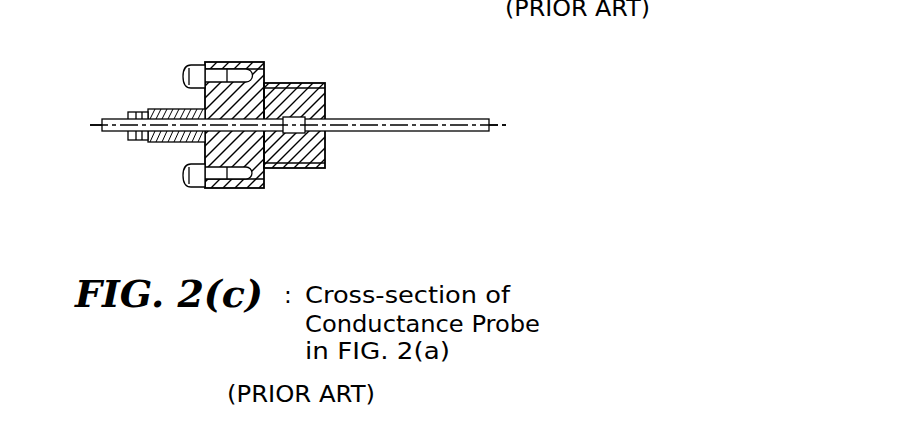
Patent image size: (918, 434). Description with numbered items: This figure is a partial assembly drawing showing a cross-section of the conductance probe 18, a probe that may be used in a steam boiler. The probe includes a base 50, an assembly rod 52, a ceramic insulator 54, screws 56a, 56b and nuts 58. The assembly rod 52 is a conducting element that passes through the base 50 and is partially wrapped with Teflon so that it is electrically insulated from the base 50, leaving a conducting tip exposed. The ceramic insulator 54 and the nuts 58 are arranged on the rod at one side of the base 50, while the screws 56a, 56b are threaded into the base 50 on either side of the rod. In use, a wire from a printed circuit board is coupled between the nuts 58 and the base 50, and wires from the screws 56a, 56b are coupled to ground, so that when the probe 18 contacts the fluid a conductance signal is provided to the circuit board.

The conductance probe 18 is at (434, 65).
The base 50 is at (302, 155).
The assembly rod 52 is at (433, 133).
The ceramic insulator 54 is at (163, 112).
The screw 56a is at (193, 187).
The screw 56b is at (192, 65).
The nuts 58 is at (130, 141).